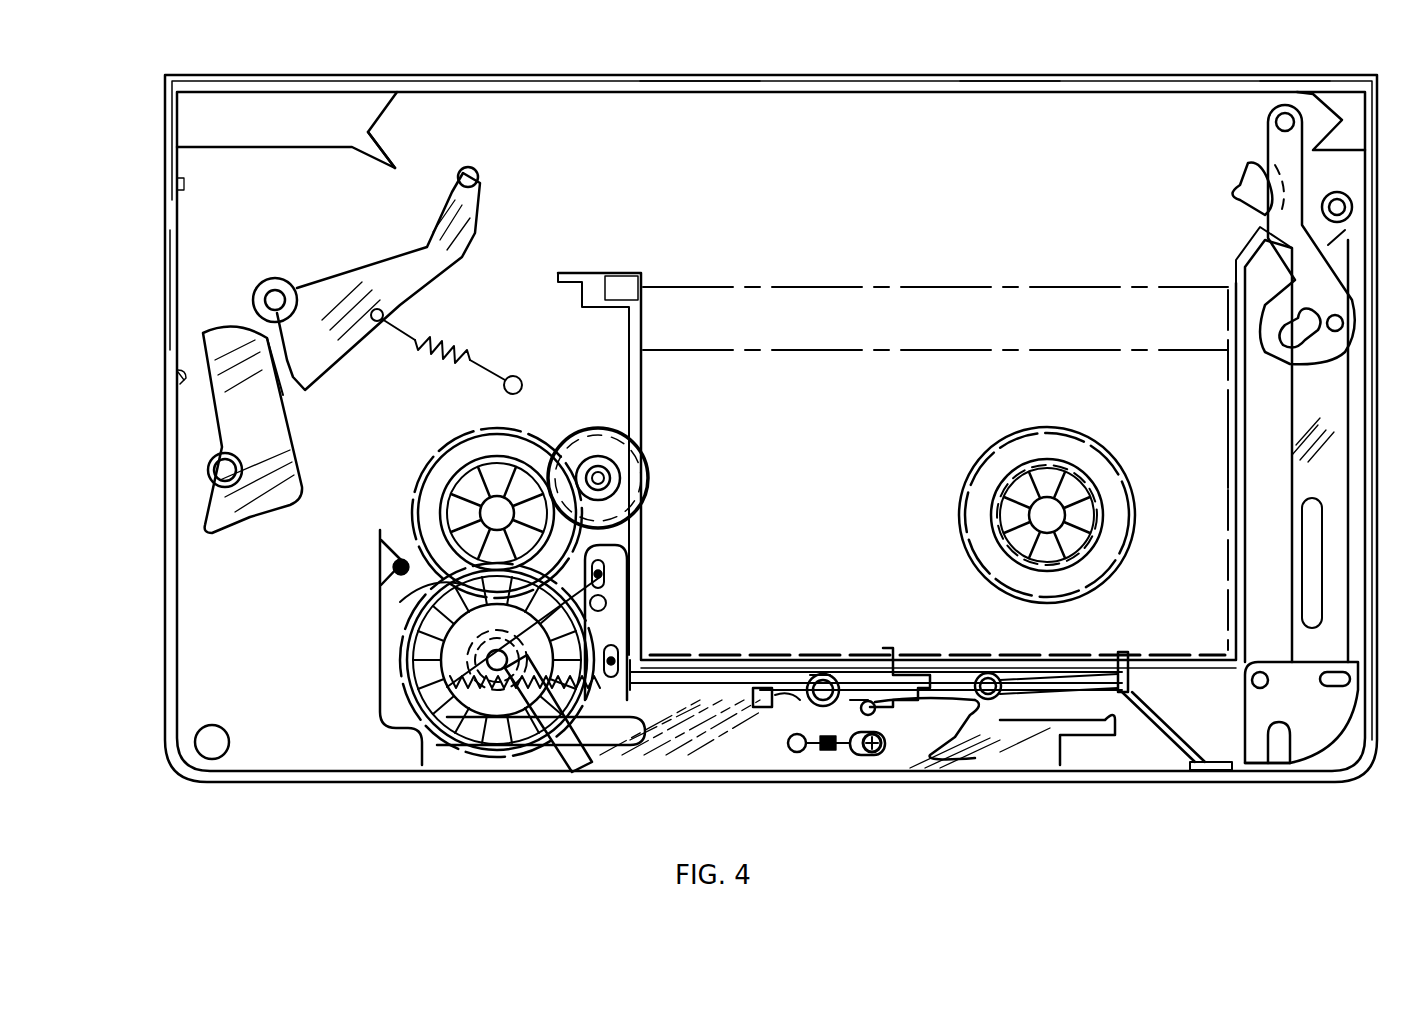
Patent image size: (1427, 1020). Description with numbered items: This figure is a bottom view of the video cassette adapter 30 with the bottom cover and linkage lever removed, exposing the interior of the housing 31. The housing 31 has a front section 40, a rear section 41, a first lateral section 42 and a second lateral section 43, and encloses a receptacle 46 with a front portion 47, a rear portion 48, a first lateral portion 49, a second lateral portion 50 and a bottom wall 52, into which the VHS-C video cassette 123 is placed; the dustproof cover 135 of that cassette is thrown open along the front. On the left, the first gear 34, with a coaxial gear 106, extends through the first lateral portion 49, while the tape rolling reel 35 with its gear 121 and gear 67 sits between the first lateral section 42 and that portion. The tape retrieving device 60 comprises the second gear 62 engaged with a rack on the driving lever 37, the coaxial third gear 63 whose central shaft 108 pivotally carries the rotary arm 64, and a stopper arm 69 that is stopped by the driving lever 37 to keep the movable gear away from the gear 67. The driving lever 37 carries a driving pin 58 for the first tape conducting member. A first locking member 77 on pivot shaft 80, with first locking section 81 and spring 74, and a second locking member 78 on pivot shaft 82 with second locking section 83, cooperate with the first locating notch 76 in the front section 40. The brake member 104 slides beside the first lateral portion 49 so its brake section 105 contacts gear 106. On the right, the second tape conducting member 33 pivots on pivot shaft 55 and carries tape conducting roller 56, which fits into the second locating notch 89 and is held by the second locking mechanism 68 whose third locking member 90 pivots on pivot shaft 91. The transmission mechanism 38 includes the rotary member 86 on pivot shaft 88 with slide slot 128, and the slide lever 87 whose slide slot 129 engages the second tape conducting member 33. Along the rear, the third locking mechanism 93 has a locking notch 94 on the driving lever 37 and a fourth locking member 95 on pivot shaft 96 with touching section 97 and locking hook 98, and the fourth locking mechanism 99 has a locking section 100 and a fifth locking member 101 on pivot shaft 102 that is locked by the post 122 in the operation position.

The video cassette adapter 30 is at (158, 152).
The housing 31 is at (168, 300).
The second tape conducting member 33 is at (1262, 208).
The first gear 34 is at (650, 475).
The tape rolling reel 35 is at (475, 447).
The driving lever 37 is at (742, 740).
The transmission mechanism 38 is at (1280, 515).
The front section 40 is at (1008, 96).
The rear section 41 is at (1075, 760).
The first lateral section 42 is at (180, 380).
The second lateral section 43 is at (1372, 400).
The receptacle 46 is at (1233, 456).
The front portion 47 is at (833, 306).
The rear portion 48 is at (1072, 660).
The first lateral portion 49 is at (648, 400).
The second lateral portion 50 is at (1236, 522).
The bottom wall 52 is at (837, 457).
The pivot shaft 55 is at (1325, 345).
The tape conducting roller 56 is at (1270, 118).
The driving pin 58 is at (400, 562).
The tape retrieving device 60 is at (320, 592).
The second gear 62 is at (410, 608).
The third gear 63 is at (405, 665).
The rotary arm 64 is at (410, 600).
The gear of the tape rolling reel 67 is at (425, 462).
The second locking mechanism 68 is at (1140, 168).
The stopper arm 69 is at (565, 775).
The spring 74 is at (485, 355).
The first locating notch 76 is at (388, 140).
The first locking member 77 is at (440, 290).
The second locking member 78 is at (300, 433).
The pivot shaft 80 is at (273, 282).
The first locking section 81 is at (478, 172).
The pivot shaft 82 is at (215, 460).
The second locking section 83 is at (232, 325).
The rotary member 86 is at (1325, 750).
The slide lever 87 is at (1347, 500).
The pivot shaft 88 is at (1262, 675).
The second locating notch 89 is at (1290, 78).
The third locking member 90 is at (1235, 200).
The pivot shaft 91 is at (1352, 212).
The third locking mechanism 93 is at (735, 613).
The locking notch 94 is at (765, 690).
The fourth locking member 95 is at (862, 690).
The pivot shaft 96 is at (825, 675).
The touching section 97 is at (890, 660).
The locking hook 98 is at (790, 690).
The fourth locking mechanism 99 is at (957, 600).
The locking section 100 is at (975, 740).
The fifth locking member 101 is at (962, 690).
The pivot shaft 102 is at (860, 690).
The brake member 104 is at (628, 540).
The brake section 105 is at (640, 488).
The gear 106 is at (655, 428).
The central shaft 108 is at (497, 660).
The gear 121 is at (525, 450).
The post 122 is at (815, 670).
The VHS-C video cassette 123 is at (930, 283).
The slide slot 128 is at (1272, 748).
The slide slot 129 is at (1268, 335).
The dustproof cover 135 is at (700, 78).